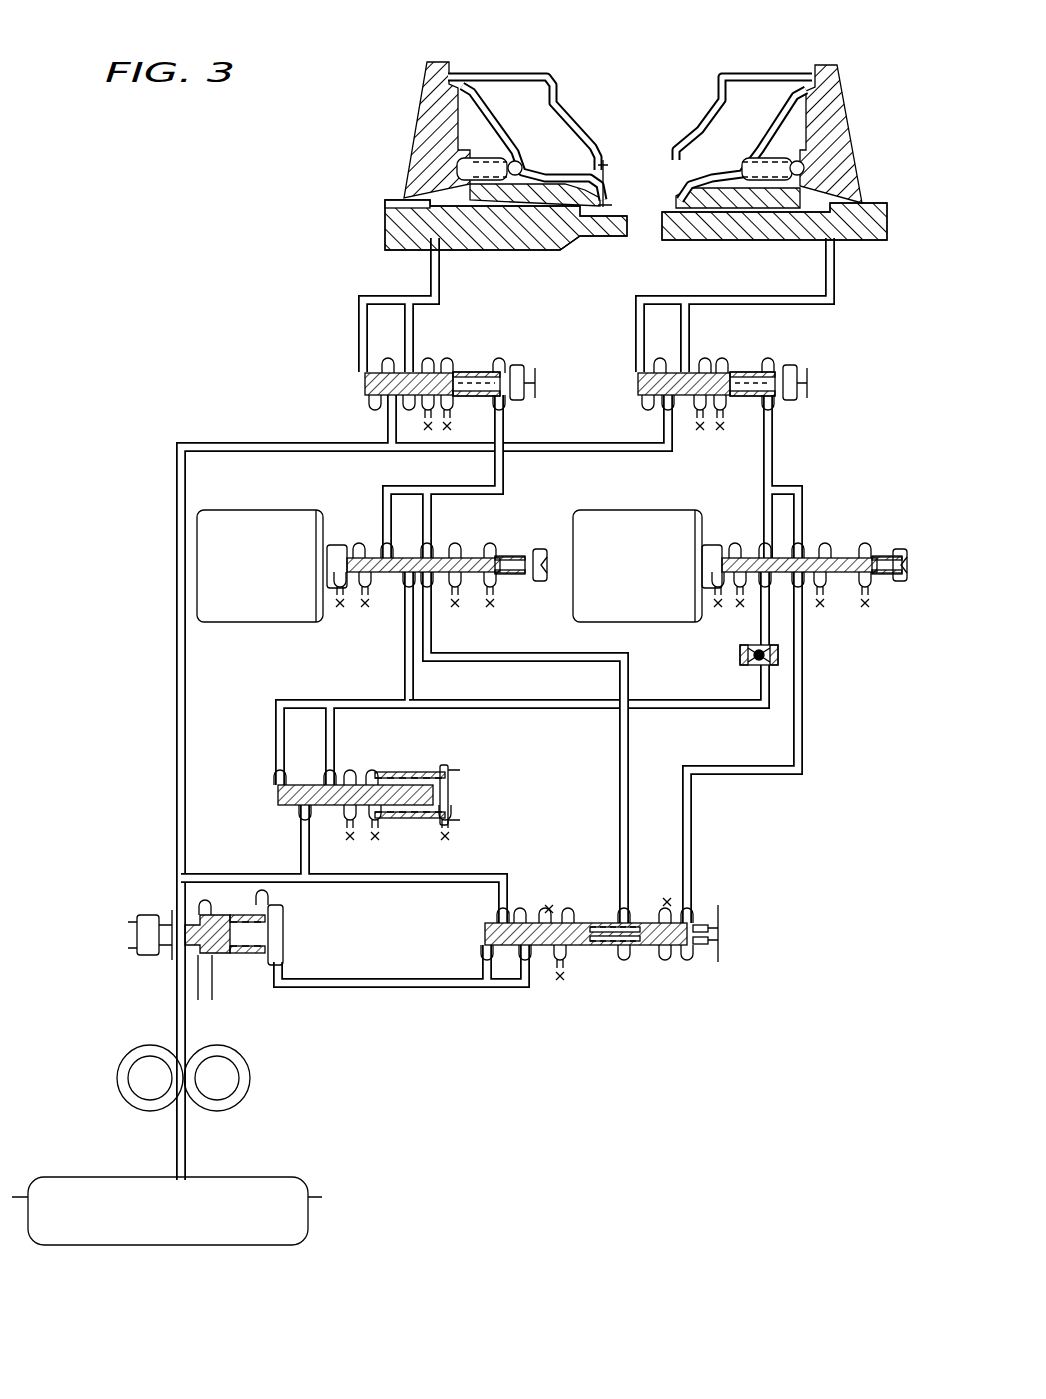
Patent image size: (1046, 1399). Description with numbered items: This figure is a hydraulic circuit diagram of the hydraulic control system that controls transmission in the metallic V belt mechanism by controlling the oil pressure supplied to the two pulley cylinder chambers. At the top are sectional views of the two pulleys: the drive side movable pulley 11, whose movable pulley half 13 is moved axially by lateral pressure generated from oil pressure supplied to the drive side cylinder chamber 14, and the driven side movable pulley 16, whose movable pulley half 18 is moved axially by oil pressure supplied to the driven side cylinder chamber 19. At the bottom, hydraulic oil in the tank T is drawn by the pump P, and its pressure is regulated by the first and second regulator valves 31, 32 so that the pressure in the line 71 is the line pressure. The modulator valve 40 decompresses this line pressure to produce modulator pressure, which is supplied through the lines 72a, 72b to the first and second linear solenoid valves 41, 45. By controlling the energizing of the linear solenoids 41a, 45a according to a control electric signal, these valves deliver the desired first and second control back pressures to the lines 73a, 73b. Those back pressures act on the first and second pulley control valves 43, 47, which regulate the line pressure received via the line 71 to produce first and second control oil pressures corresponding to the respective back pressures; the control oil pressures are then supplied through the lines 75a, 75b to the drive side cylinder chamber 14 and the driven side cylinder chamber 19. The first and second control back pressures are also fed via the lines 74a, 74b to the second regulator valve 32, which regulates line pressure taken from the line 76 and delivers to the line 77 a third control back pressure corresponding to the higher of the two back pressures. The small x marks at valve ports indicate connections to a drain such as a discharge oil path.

The drive side movable pulley 11 is at (790, 124).
The movable pulley half 13 is at (805, 147).
The drive side cylinder chamber 14 is at (798, 152).
The driven side movable pulley 16 is at (477, 129).
The movable pulley half 18 is at (410, 131).
The driven side cylinder chamber 19 is at (482, 140).
The first regulator valve 31 is at (235, 960).
The second regulator valve 32 is at (640, 965).
The modulator valve 40 is at (425, 765).
The first linear solenoid valve 41 is at (744, 550).
The linear solenoid 41a is at (657, 581).
The first pulley control valve 43 is at (820, 357).
The second linear solenoid valve 45 is at (381, 560).
The linear solenoid 45a is at (282, 581).
The second pulley control valve 47 is at (505, 360).
The line 71 is at (243, 442).
The line 72a is at (668, 700).
The line 72b is at (405, 660).
The line 73a is at (778, 460).
The line 73b is at (508, 473).
The line 74a is at (768, 778).
The line 74b is at (630, 748).
The line 75a is at (838, 278).
The line 75b is at (440, 286).
The line 76 is at (490, 876).
The line 77 is at (400, 990).
The pump P is at (253, 1078).
The tank T is at (322, 1210).